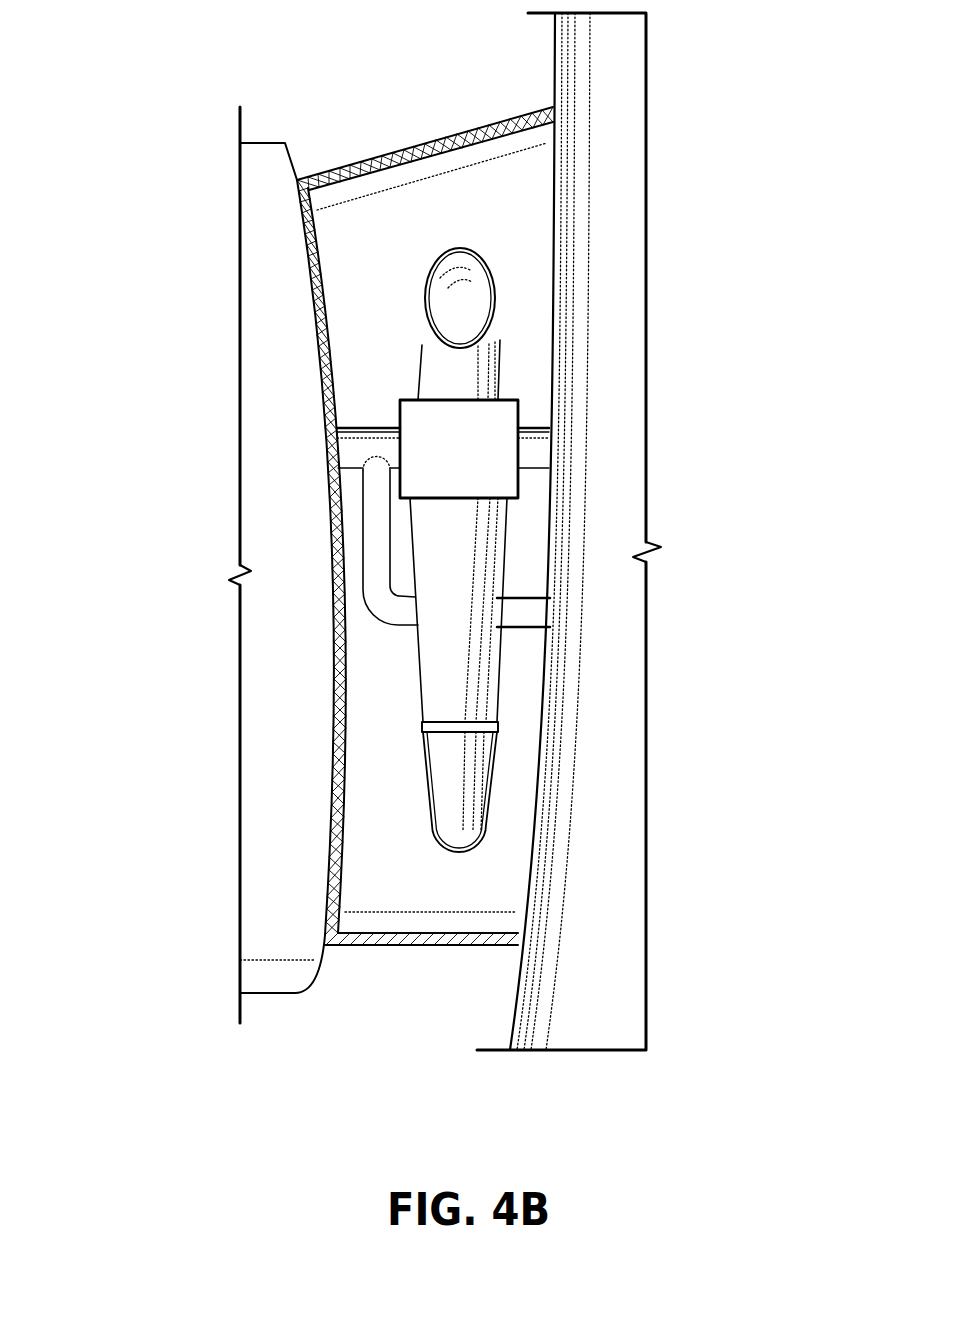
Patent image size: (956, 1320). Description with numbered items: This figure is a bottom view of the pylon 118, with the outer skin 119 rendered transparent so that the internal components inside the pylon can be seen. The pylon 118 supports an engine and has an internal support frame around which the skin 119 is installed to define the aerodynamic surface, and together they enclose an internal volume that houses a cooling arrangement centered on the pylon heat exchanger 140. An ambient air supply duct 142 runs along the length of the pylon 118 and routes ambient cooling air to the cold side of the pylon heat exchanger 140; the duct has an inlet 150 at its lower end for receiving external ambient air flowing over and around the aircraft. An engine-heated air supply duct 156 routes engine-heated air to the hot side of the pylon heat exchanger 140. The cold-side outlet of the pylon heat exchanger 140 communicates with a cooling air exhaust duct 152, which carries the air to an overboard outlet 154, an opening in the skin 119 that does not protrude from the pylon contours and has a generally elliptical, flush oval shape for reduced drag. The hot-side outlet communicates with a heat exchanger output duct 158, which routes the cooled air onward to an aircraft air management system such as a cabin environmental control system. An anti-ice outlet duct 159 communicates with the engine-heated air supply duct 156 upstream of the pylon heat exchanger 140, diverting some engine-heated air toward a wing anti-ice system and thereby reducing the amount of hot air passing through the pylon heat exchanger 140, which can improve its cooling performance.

The pylon 118 is at (367, 842).
The outer skin 119 is at (340, 690).
The pylon heat exchanger 140 is at (495, 417).
The ambient air supply duct 142 is at (475, 633).
The inlet 150 is at (478, 822).
The cooling air exhaust duct 152 is at (500, 348).
The overboard outlet 154 is at (488, 295).
The engine-heated air supply duct 156 is at (345, 448).
The heat exchanger output duct 158 is at (540, 450).
The anti-ice outlet duct 159 is at (367, 498).